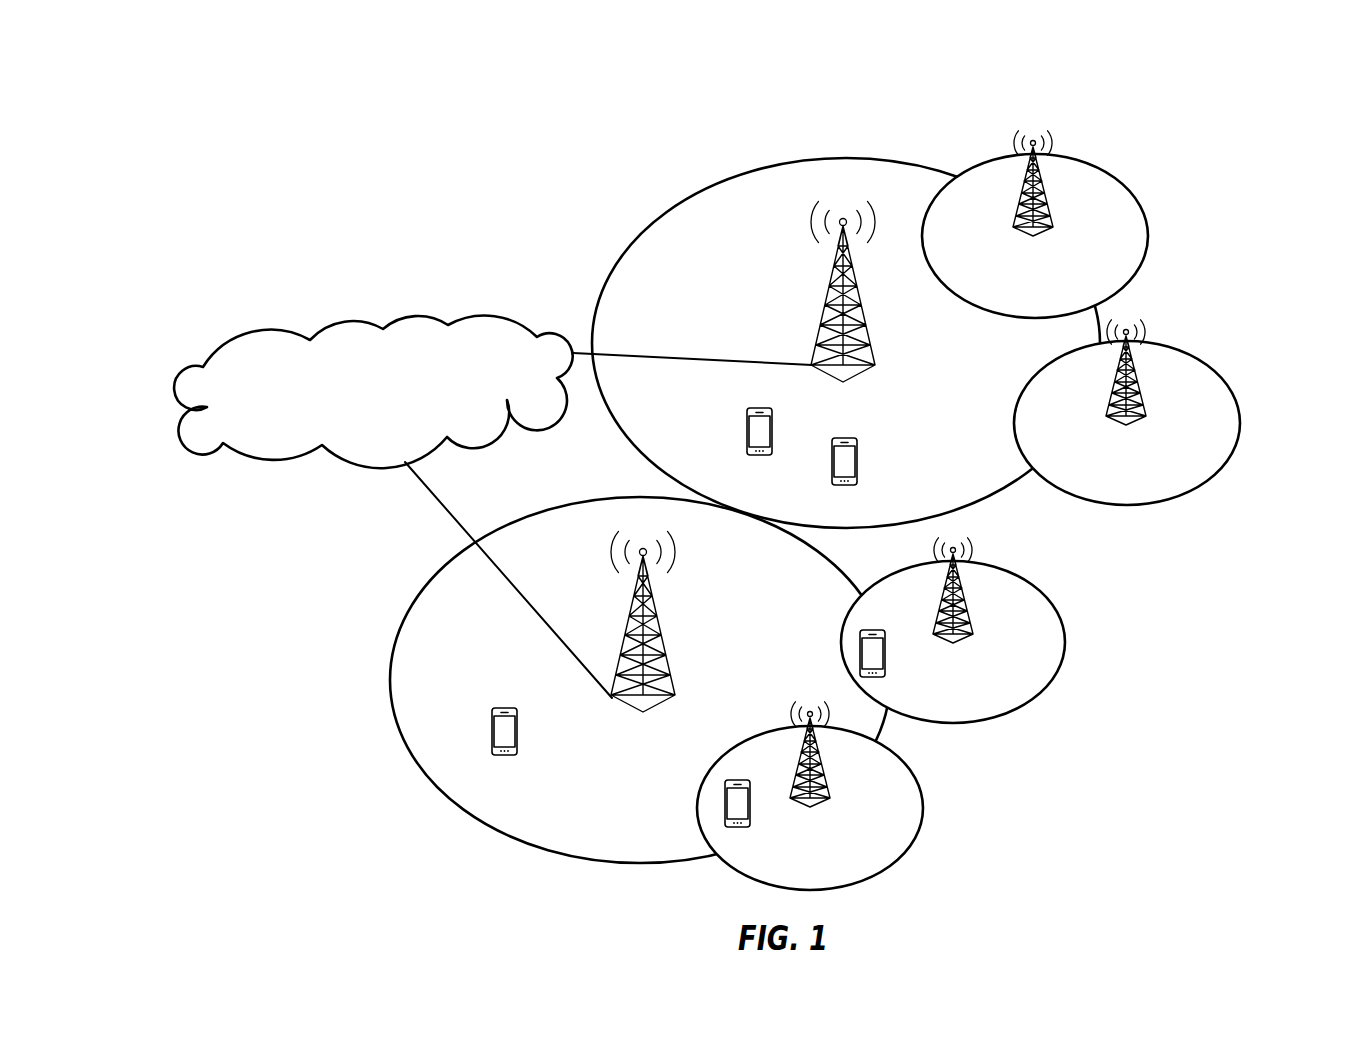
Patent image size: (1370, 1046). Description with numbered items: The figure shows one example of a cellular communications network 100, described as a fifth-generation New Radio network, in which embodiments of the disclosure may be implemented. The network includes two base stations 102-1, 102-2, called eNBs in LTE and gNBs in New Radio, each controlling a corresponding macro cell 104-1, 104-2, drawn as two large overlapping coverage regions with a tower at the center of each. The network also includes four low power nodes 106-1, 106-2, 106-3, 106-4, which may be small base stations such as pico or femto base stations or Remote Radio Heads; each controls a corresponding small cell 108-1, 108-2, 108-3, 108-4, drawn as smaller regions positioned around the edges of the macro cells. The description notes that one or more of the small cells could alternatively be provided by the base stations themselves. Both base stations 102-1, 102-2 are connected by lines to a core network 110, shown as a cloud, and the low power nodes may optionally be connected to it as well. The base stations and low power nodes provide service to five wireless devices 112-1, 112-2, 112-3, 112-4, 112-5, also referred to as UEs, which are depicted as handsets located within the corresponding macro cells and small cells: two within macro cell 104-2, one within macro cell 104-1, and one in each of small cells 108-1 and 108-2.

The cellular communications network 100 is at (1217, 123).
The base station 102-1 is at (660, 643).
The base station 102-2 is at (860, 315).
The macro cell 104-1 is at (505, 838).
The macro cell 104-2 is at (845, 158).
The low power node 106-1 is at (830, 780).
The low power node 106-2 is at (970, 622).
The low power node 106-3 is at (1143, 402).
The low power node 106-4 is at (1052, 217).
The small cell 108-1 is at (925, 810).
The small cell 108-2 is at (1067, 652).
The small cell 108-3 is at (1240, 430).
The small cell 108-4 is at (1148, 223).
The core network 110 is at (356, 434).
The wireless device 112-1 is at (763, 758).
The wireless device 112-2 is at (892, 607).
The wireless device 112-3 is at (517, 730).
The wireless device 112-4 is at (775, 433).
The wireless device 112-5 is at (858, 462).